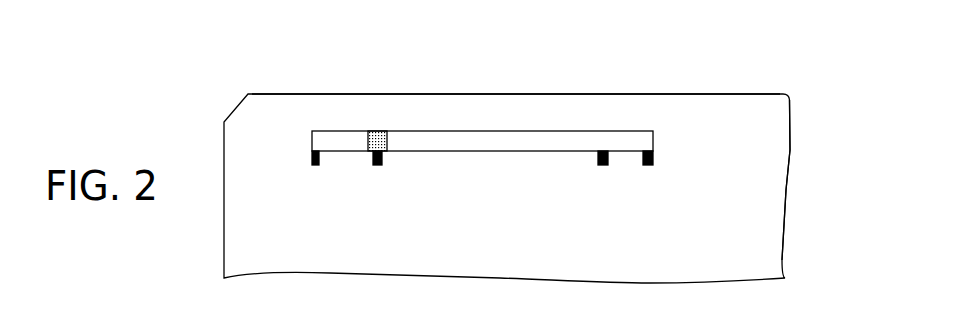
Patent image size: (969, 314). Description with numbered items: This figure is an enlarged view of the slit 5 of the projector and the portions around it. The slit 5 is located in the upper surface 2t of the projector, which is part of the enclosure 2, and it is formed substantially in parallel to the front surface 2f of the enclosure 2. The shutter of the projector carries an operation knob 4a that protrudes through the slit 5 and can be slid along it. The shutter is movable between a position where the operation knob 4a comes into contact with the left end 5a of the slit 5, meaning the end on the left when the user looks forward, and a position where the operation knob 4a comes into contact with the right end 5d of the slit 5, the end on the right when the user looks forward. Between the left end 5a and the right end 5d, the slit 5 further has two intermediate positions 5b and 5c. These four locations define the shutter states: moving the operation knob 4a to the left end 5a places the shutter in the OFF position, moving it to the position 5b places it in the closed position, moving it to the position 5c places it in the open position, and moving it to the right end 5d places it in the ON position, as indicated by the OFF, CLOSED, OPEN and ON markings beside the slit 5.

The enclosure 2 is at (715, 77).
The front surface 2f is at (465, 93).
The upper surface 2t is at (777, 192).
The operation knob 4a is at (388, 143).
The slit 5 is at (517, 145).
The left end 5a is at (315, 145).
The position 5b is at (380, 131).
The position 5c is at (605, 145).
The right end 5d is at (642, 143).